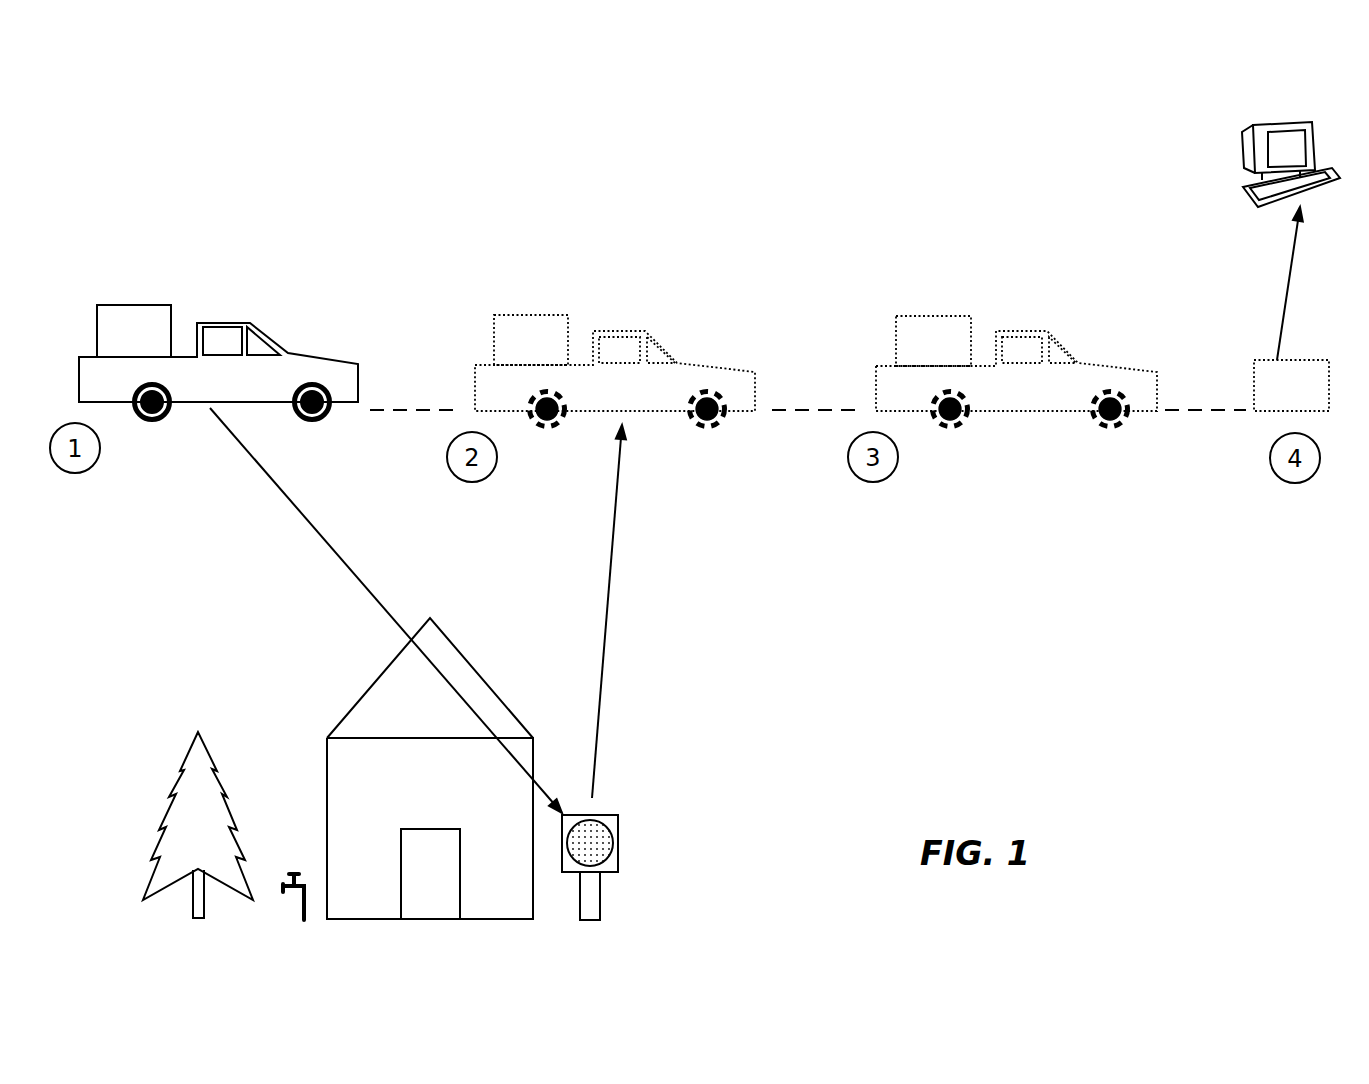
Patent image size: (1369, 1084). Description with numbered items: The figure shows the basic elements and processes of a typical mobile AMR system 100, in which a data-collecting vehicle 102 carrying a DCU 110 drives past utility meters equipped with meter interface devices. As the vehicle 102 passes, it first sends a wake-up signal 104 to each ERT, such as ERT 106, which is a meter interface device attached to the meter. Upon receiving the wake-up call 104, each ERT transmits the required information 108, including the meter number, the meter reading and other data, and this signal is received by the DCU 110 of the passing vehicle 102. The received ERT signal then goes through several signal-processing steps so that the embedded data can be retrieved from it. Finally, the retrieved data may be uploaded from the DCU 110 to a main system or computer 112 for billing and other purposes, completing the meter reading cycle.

The mobile AMR system 100 is at (977, 590).
The data-collecting vehicle 102 is at (253, 325).
The wake-up signal 104 is at (271, 478).
The ERT 106 is at (620, 843).
The required information 108 is at (613, 562).
The DCU 110 is at (135, 305).
The main system or computer 112 is at (1277, 123).